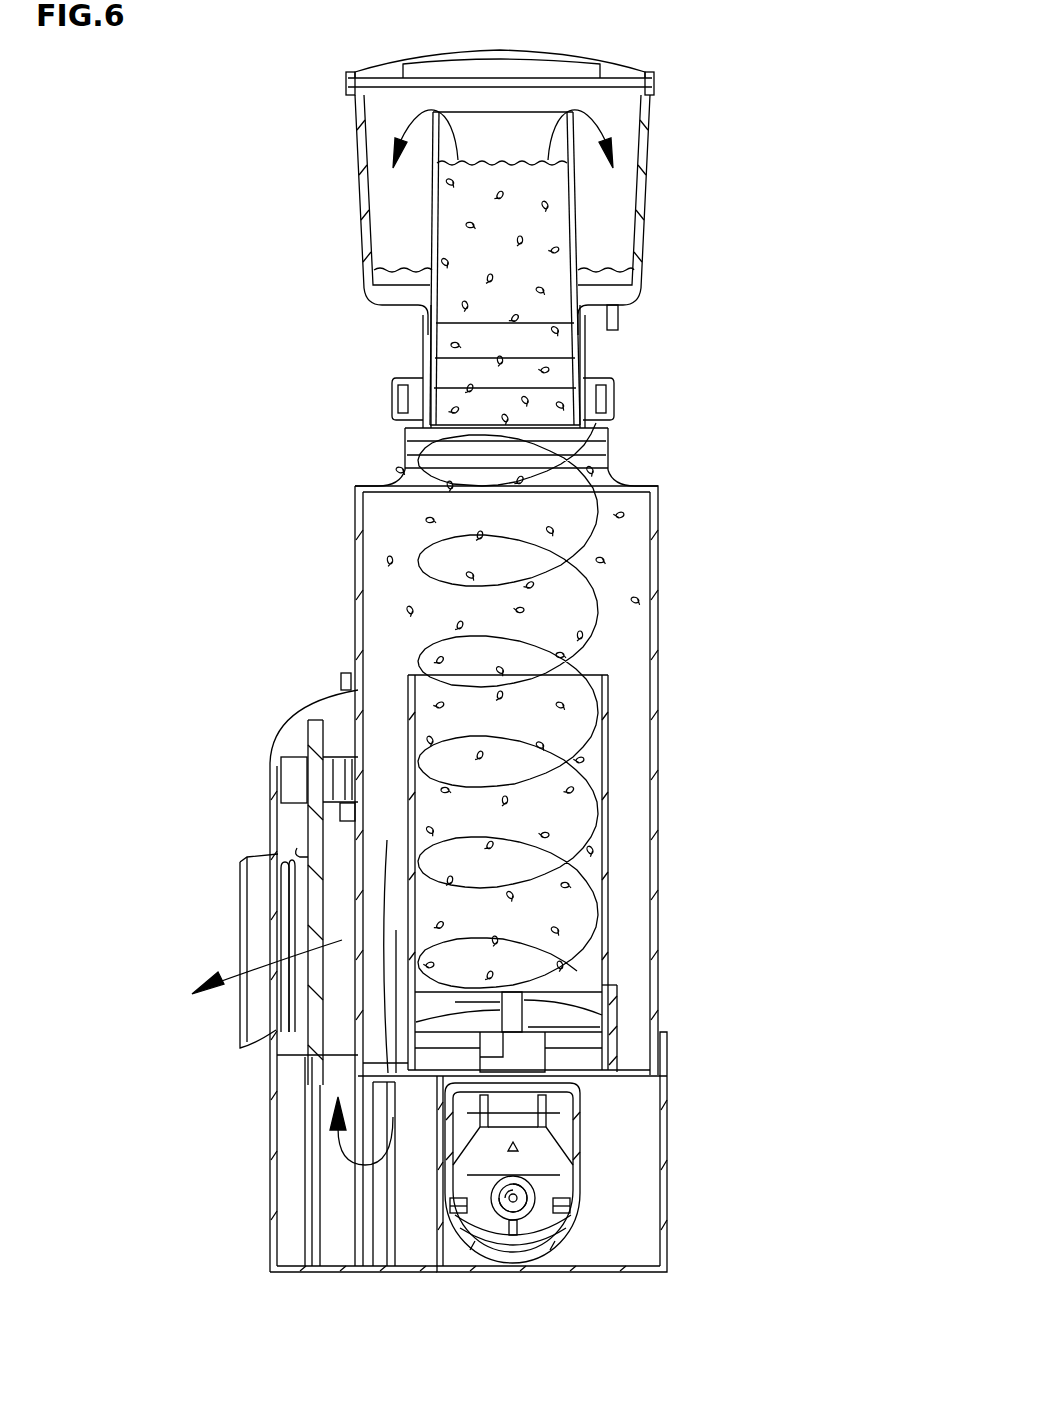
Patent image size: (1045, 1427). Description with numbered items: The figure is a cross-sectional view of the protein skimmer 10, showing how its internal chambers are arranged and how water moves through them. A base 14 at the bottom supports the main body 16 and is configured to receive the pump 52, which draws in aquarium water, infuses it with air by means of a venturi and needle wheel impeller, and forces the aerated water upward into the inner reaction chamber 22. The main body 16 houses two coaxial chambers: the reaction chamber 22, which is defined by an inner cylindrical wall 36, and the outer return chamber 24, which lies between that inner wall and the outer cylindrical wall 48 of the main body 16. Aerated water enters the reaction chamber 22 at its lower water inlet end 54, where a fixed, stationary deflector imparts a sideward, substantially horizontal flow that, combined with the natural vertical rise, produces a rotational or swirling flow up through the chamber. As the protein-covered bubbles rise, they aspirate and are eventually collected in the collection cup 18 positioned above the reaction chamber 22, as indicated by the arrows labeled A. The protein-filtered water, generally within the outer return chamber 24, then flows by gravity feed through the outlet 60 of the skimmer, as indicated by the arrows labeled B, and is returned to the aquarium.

The protein skimmer 10 is at (690, 47).
The base 14 is at (667, 1187).
The main body 16 is at (657, 641).
The collection cup 18 is at (650, 202).
The inner reaction chamber 22 is at (490, 812).
The outer return chamber 24 is at (401, 744).
The inner cylindrical wall 36 is at (610, 803).
The outer cylindrical wall 48 is at (358, 612).
The pump 52 is at (572, 1255).
The water inlet end 54 is at (634, 1017).
The outlet 60 is at (278, 900).